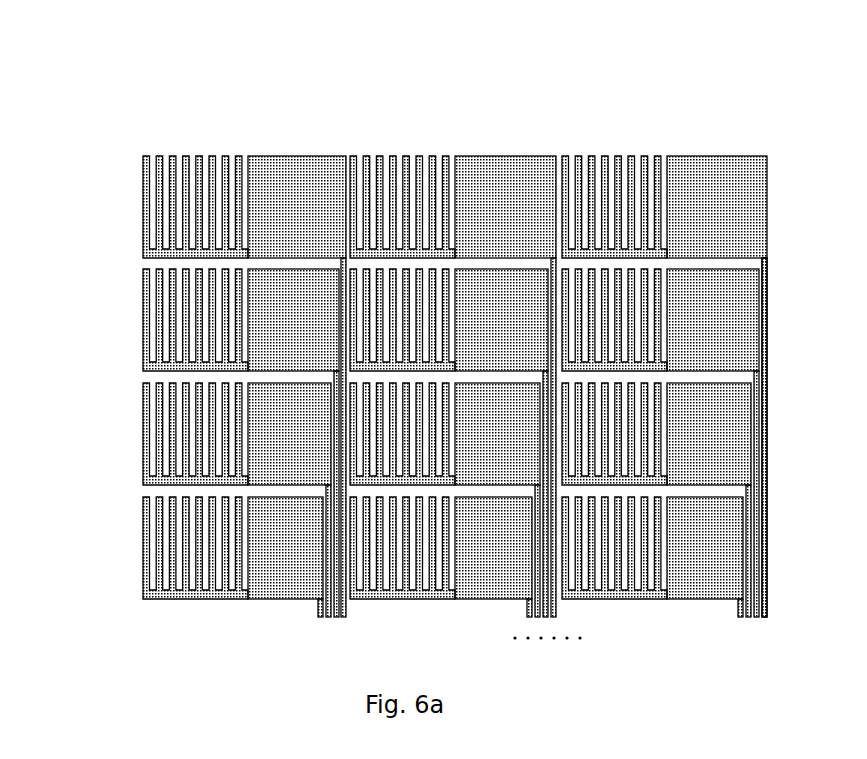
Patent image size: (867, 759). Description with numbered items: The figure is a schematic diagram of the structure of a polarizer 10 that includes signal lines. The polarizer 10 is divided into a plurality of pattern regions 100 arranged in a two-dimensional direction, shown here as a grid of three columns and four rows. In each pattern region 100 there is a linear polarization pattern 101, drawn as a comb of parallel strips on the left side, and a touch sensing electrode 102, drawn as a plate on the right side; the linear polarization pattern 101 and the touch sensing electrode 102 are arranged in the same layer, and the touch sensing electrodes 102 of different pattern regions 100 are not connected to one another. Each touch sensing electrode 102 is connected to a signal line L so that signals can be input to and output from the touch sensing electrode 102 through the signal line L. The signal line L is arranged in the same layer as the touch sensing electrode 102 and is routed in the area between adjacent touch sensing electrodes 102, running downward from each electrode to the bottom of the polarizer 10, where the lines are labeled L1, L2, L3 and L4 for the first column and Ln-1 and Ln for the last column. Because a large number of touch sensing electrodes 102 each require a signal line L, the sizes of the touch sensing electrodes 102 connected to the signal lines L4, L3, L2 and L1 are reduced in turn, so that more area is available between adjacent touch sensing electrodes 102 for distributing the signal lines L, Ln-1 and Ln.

The polarizer 10 is at (51, 56).
The pattern region 100 is at (343, 78).
The linear polarization pattern 101 is at (224, 160).
The touch sensing electrode 102 is at (295, 158).
The signal line L is at (767, 281).
The signal line L1 is at (320, 617).
The signal line L2 is at (328, 617).
The signal line L3 is at (337, 617).
The signal line L4 is at (345, 617).
The signal line Ln-1 is at (757, 617).
The signal line Ln is at (766, 617).